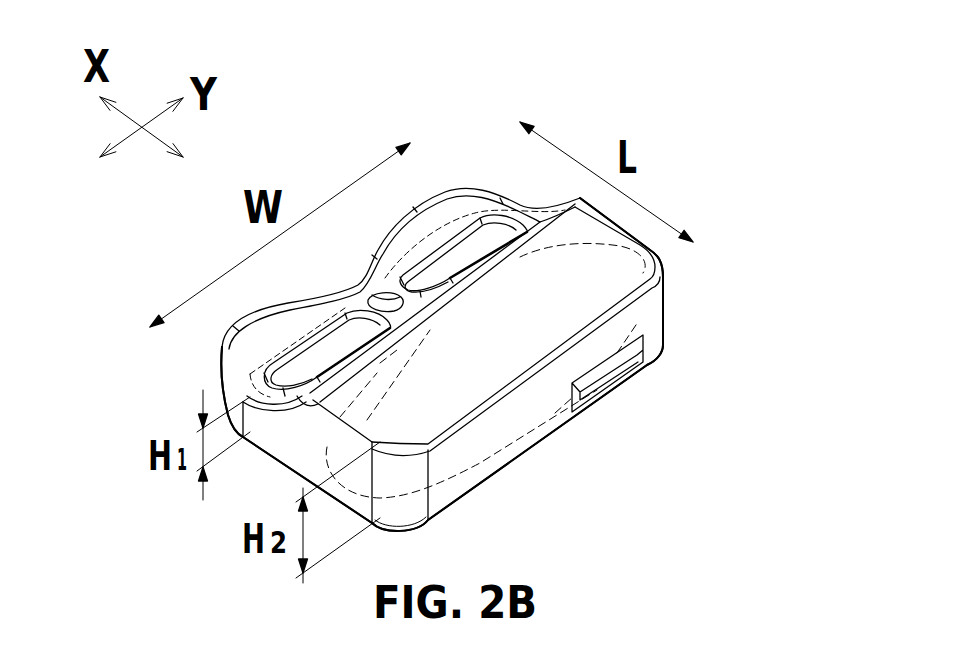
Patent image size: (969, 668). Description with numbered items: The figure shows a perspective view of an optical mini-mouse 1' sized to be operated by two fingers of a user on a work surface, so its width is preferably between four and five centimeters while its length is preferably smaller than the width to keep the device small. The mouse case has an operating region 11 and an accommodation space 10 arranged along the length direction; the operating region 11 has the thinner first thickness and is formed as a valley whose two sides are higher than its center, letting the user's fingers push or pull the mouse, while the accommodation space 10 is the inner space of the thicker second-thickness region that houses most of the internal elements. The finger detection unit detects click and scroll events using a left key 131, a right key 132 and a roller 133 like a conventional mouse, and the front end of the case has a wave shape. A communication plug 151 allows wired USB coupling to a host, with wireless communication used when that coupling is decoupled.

The optical mini-mouse 1' is at (442, 279).
The accommodation space 10 is at (470, 470).
The operating region 11 is at (464, 222).
The left key 131 is at (283, 374).
The right key 132 is at (505, 224).
The roller 133 is at (382, 300).
The communication plug 151 is at (608, 372).